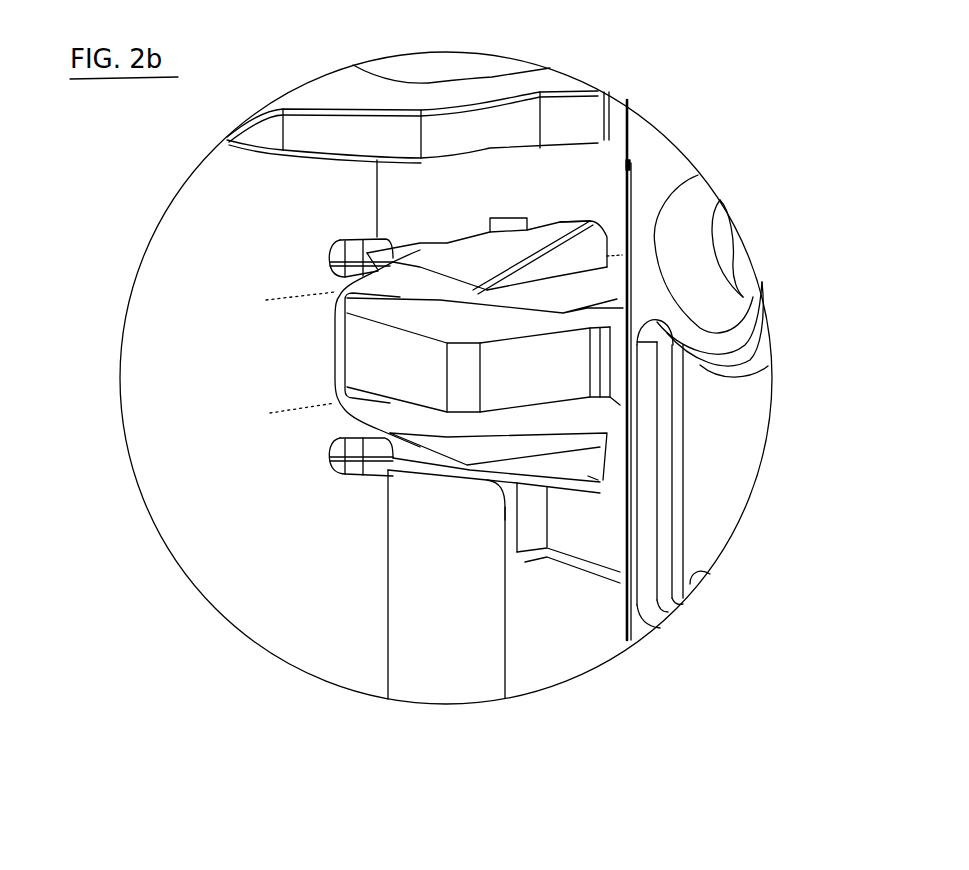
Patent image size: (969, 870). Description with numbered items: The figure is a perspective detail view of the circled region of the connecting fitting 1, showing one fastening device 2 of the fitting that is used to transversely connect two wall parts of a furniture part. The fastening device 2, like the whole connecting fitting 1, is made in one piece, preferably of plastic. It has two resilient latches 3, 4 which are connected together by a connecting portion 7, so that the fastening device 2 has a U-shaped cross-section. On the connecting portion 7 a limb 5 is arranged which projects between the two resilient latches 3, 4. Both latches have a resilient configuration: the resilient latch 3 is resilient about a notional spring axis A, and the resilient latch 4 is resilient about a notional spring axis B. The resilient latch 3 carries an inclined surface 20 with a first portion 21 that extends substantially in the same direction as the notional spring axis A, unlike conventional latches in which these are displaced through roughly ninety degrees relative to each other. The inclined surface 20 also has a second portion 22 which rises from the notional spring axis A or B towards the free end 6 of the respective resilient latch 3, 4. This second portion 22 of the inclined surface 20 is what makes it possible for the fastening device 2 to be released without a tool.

The connecting fitting 1 is at (467, 628).
The fastening device 2 is at (318, 338).
The resilient latch 3 is at (578, 253).
The resilient latch 4 is at (584, 470).
The limb 5 is at (553, 374).
The free end 6 is at (588, 233).
The connecting portion 7 is at (338, 362).
The inclined surface 20 is at (450, 247).
The first portion 21 is at (480, 270).
The second portion 22 is at (482, 224).
The spring axis A is at (262, 298).
The spring axis B is at (265, 415).